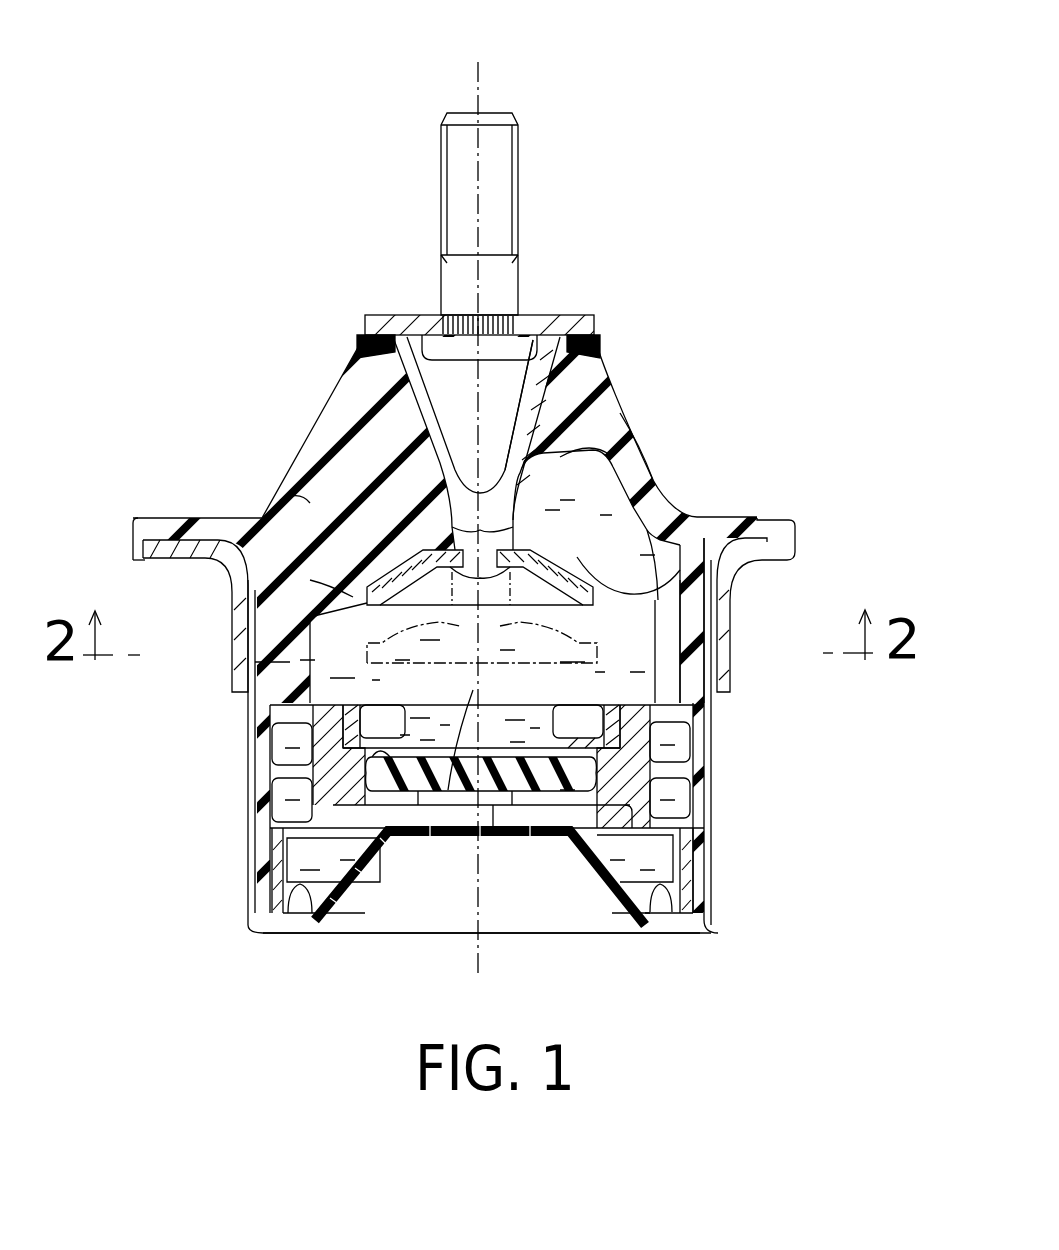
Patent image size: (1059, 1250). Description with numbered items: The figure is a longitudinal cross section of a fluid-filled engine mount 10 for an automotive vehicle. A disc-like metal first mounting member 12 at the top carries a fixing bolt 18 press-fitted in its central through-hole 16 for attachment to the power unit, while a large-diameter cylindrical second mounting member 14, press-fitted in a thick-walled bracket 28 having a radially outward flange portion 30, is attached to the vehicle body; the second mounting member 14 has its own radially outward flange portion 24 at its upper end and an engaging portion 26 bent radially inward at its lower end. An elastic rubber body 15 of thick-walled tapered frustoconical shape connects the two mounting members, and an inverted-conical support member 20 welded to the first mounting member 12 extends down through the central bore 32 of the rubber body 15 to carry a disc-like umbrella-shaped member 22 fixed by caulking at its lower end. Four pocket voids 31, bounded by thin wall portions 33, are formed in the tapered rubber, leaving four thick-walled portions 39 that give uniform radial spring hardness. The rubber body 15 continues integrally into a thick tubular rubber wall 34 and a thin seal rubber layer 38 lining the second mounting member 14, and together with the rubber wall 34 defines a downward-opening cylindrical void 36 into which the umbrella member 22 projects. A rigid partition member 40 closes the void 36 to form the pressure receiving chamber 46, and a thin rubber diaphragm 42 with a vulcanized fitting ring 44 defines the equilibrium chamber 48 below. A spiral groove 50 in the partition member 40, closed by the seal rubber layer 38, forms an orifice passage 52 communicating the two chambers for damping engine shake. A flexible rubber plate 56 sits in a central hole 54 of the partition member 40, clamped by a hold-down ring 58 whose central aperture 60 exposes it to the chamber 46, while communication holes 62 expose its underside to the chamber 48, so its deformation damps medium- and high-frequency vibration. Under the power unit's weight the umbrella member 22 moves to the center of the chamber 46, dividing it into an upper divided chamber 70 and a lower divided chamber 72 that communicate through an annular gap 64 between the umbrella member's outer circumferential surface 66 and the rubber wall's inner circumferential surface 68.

The engine mount 10 is at (603, 125).
The first mounting member 12 is at (413, 320).
The second mounting member 14 is at (712, 808).
The elastic rubber body 15 is at (301, 464).
The central through-hole 16 is at (503, 314).
The fixing bolt 18 is at (454, 172).
The support member 20 is at (555, 400).
The umbrella-shaped member 22 is at (573, 507).
The flange portion 24 is at (166, 546).
The engaging portion 26 is at (263, 932).
The bracket 28 is at (237, 607).
The flange portion 30 is at (173, 560).
The pocket voids 31 is at (560, 465).
The central bore 32 is at (420, 388).
The wall portions 33 is at (636, 468).
The tubular rubber wall 34 is at (280, 664).
The cylindrical void 36 is at (405, 528).
The seal rubber layer 38 is at (262, 837).
The thick-walled portions 39 is at (307, 505).
The partition member 40 is at (355, 840).
The diaphragm 42 is at (597, 899).
The fitting ring 44 is at (700, 887).
The pressure receiving chamber 46 is at (353, 599).
The equilibrium chamber 48 is at (643, 905).
The spiral groove 50 is at (680, 725).
The orifice passage 52 is at (283, 750).
The central hole 54 is at (583, 775).
The rubber plate 56 is at (547, 772).
The hold-down ring 58 is at (390, 737).
The central aperture 60 is at (550, 739).
The communication holes 62 is at (418, 800).
The annular gap 64 is at (700, 610).
The outer circumferential surface 66 is at (692, 565).
The inner circumferential surface 68 is at (318, 664).
The upper divided chamber 70 is at (360, 525).
The lower divided chamber 72 is at (448, 800).